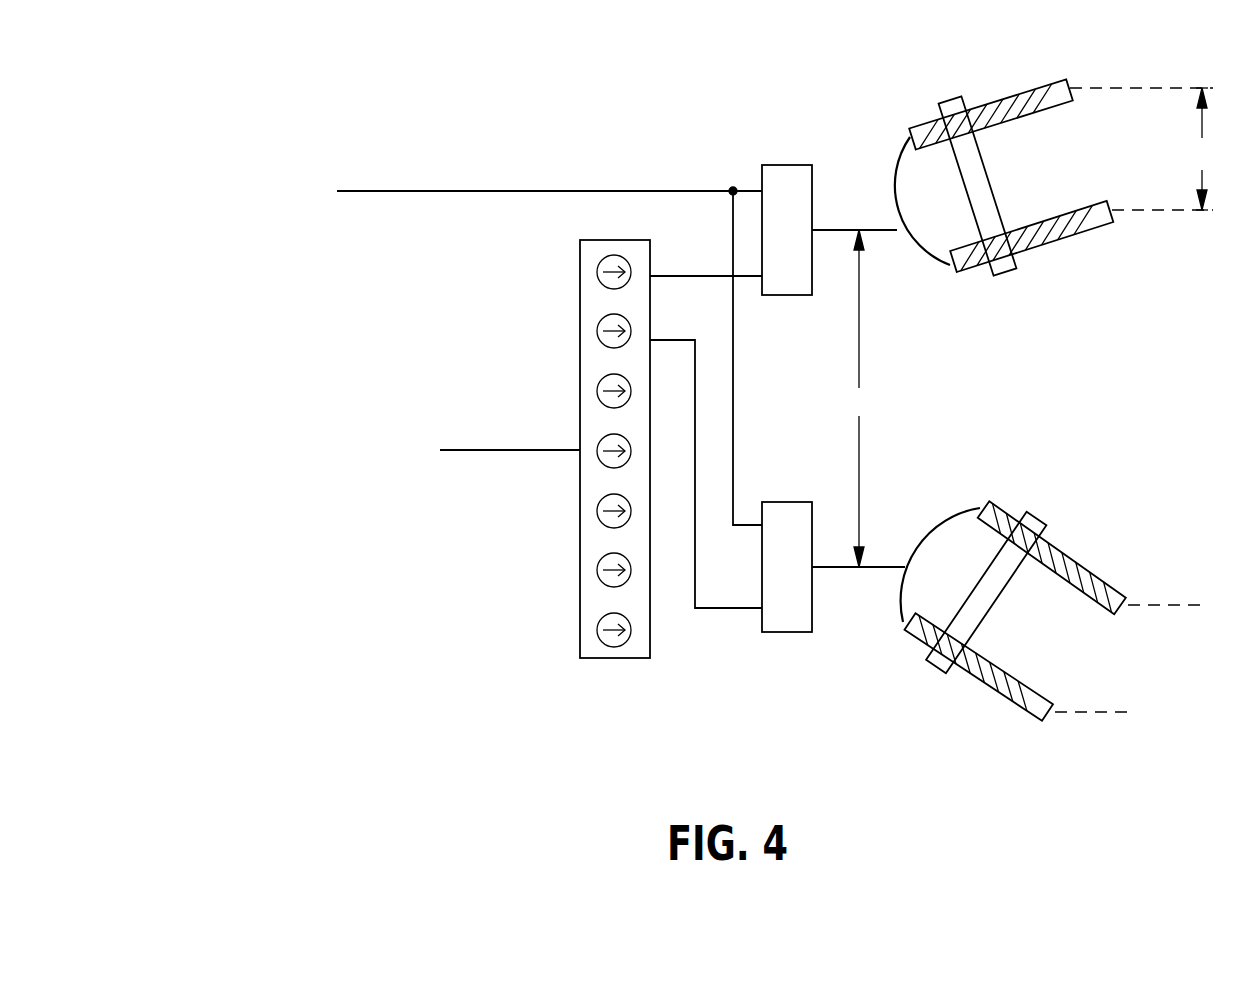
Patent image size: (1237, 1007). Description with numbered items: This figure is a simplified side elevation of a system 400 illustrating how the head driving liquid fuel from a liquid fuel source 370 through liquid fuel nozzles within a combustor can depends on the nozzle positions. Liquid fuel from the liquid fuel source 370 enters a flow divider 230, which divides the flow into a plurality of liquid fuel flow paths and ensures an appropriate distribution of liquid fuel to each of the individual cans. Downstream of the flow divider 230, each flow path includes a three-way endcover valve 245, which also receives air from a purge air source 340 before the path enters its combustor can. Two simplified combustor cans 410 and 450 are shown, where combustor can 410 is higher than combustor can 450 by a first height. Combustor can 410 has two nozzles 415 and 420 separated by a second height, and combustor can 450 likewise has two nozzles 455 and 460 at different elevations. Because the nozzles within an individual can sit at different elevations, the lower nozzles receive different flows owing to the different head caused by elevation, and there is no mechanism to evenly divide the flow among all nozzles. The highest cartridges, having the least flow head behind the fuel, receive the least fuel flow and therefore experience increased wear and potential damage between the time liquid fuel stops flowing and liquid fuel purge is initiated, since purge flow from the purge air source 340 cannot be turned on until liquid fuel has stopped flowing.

The fuel delivery system 400 is at (580, 118).
The purge air source 340 is at (305, 244).
The liquid fuel source 370 is at (427, 528).
The flow divider 230 is at (650, 647).
The 3-way valve 245 is at (813, 185).
The combustor can 410 is at (1054, 157).
The nozzle 415 is at (1027, 87).
The nozzle 420 is at (1080, 231).
The combustor can 450 is at (1052, 654).
The nozzle 455 is at (1093, 566).
The nozzle 460 is at (1027, 683).